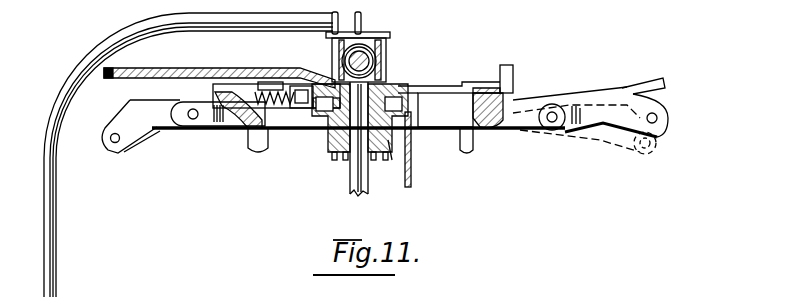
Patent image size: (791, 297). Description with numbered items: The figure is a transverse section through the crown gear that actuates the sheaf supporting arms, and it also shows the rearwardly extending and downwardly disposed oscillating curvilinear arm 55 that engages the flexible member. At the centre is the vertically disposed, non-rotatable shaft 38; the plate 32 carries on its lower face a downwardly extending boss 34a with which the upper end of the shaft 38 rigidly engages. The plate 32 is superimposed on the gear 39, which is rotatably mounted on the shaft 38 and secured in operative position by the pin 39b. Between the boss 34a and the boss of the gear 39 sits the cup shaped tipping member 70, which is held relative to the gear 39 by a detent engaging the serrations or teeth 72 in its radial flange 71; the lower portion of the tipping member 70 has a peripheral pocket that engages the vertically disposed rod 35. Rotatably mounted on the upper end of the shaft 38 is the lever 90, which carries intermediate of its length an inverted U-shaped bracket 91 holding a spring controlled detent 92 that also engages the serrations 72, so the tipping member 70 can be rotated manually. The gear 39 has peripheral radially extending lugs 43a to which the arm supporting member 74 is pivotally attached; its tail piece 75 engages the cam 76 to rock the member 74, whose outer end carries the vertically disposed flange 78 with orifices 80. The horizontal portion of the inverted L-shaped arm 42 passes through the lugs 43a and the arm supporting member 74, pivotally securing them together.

The oscillating curvilinear arm 55 is at (52, 245).
The lever 90 is at (200, 68).
The inverted U-shaped bracket 91 is at (254, 88).
The spring controlled detent 92 is at (262, 135).
The radial flange 71 is at (303, 112).
The peripheral radially extending lugs 43a is at (200, 168).
The arm supporting member 74 is at (173, 118).
The vertically disposed flange 78 is at (135, 128).
The orifices 80 is at (110, 145).
The plate 32 is at (317, 82).
The downwardly extending boss 34a is at (385, 100).
The shaft 38 is at (357, 173).
The cup shaped tipping member 70 is at (400, 100).
The cam 76 is at (510, 98).
The serrations or teeth 72 is at (410, 93).
The tail piece 75 is at (510, 135).
The inverted L-shaped arm 42 is at (670, 69).
The vertically disposed rod 35 is at (415, 183).
The gear 39 is at (238, 133).
The pin 39b is at (378, 163).